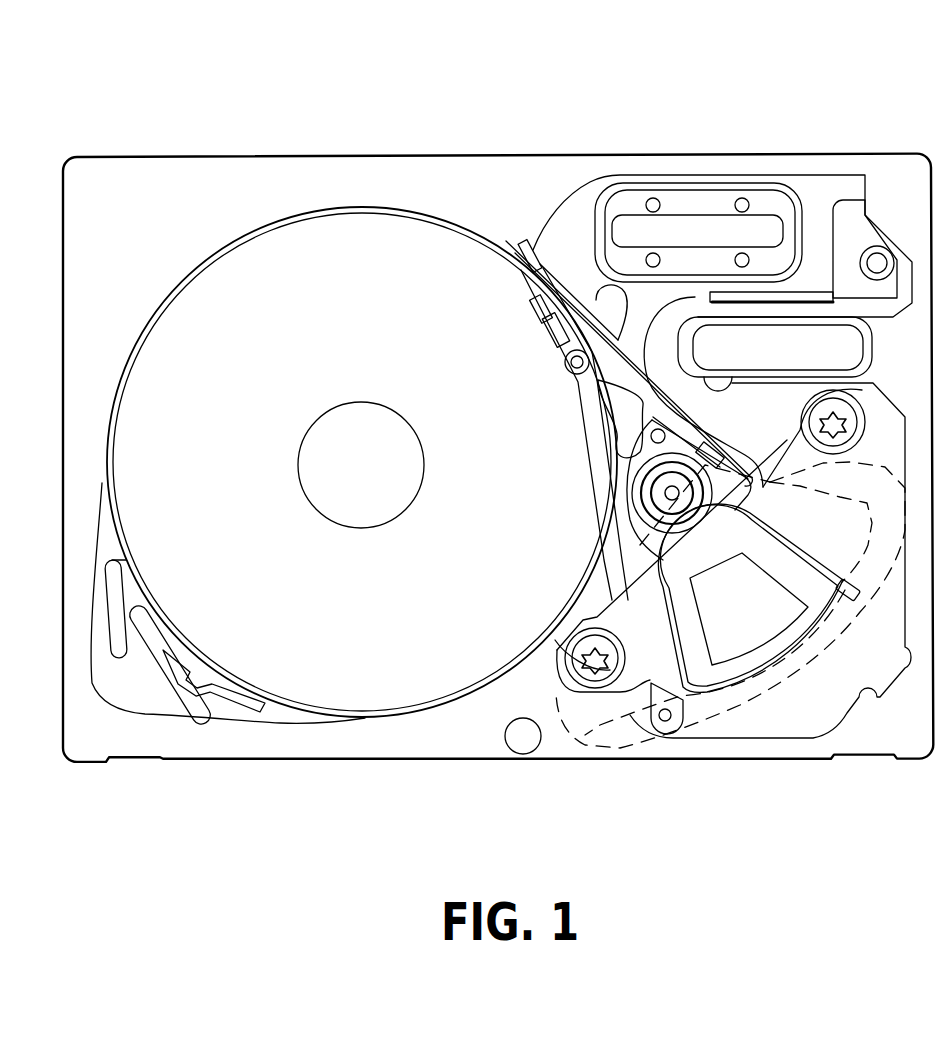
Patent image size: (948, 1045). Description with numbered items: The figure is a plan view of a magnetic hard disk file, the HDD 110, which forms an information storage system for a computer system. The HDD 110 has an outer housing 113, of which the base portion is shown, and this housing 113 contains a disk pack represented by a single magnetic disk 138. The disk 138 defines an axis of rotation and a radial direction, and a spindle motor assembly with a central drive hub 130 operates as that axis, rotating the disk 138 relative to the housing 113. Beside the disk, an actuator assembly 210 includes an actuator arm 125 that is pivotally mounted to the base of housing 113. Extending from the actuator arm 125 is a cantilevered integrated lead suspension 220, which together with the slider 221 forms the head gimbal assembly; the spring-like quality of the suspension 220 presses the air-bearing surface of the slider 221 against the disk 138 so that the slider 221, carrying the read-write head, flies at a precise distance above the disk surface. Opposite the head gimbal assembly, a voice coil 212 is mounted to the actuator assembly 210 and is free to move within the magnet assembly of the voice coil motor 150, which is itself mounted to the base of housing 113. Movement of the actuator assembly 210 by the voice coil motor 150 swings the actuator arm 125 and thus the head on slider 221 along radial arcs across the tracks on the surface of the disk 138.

The HDD 110 is at (213, 137).
The housing 113 is at (437, 155).
The magnetic disk 138 is at (334, 208).
The central drive hub 130 is at (387, 484).
The actuator arm 125 is at (580, 397).
The slider 221 is at (515, 268).
The integrated lead suspension 220 is at (528, 314).
The actuator assembly 210 is at (628, 522).
The voice coil motor 150 is at (840, 620).
The voice coil 212 is at (618, 712).